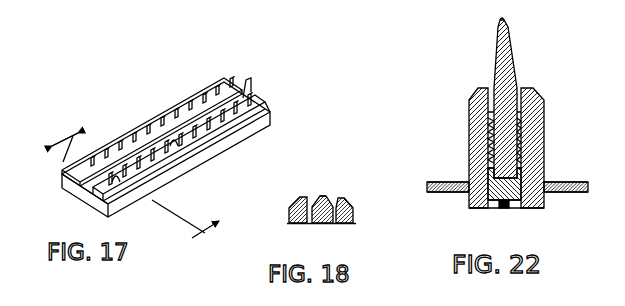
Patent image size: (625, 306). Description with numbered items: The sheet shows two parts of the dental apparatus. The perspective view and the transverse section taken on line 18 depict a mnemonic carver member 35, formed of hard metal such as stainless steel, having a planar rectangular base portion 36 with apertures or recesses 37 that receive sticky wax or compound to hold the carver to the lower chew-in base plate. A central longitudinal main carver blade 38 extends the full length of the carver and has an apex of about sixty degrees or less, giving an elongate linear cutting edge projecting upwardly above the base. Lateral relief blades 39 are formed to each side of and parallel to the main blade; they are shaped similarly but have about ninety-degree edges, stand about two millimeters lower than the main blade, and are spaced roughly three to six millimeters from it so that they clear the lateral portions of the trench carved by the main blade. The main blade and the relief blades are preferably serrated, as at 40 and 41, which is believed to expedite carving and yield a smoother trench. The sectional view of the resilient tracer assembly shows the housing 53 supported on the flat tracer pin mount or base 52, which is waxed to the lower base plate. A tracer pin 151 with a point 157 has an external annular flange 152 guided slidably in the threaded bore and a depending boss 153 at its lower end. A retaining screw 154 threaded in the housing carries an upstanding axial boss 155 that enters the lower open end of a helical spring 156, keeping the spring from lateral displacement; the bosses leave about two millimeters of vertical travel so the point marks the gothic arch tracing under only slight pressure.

In FIG. 17, the section line 18— 18 is at (130, 187).
In FIG. 17, the mnemonic carver member 35 is at (214, 150).
In FIG. 18, the mnemonic carver member 35 is at (326, 200).
In FIG. 17, the base portion 36 is at (80, 208).
In FIG. 18, the base portion 36 is at (330, 225).
In FIG. 17, the apertures or recesses 37 is at (181, 142).
In FIG. 18, the apertures or recesses 37 is at (292, 228).
In FIG. 17, the main carver blade 38 is at (240, 86).
In FIG. 18, the main carver blade 38 is at (322, 198).
In FIG. 17, the lateral relief blades 39 is at (208, 90).
In FIG. 18, the lateral relief blades 39 is at (298, 198).
In FIG. 17, the serrations of main blade 40 is at (138, 132).
In FIG. 17, the serrations of relief blades 41 is at (188, 104).
In FIG. 22, the tracer pin mount or base 52 is at (572, 182).
In FIG. 22, the housing 53 is at (528, 96).
In FIG. 22, the tracer pin 151 is at (514, 68).
In FIG. 22, the external annular flange 152 is at (544, 122).
In FIG. 22, the depending boss 153 is at (544, 142).
In FIG. 22, the retaining screw 154 is at (501, 208).
In FIG. 22, the upstanding axial boss 155 is at (470, 172).
In FIG. 22, the helical spring 156 is at (487, 140).
In FIG. 22, the point of tracer pin 157 is at (505, 21).